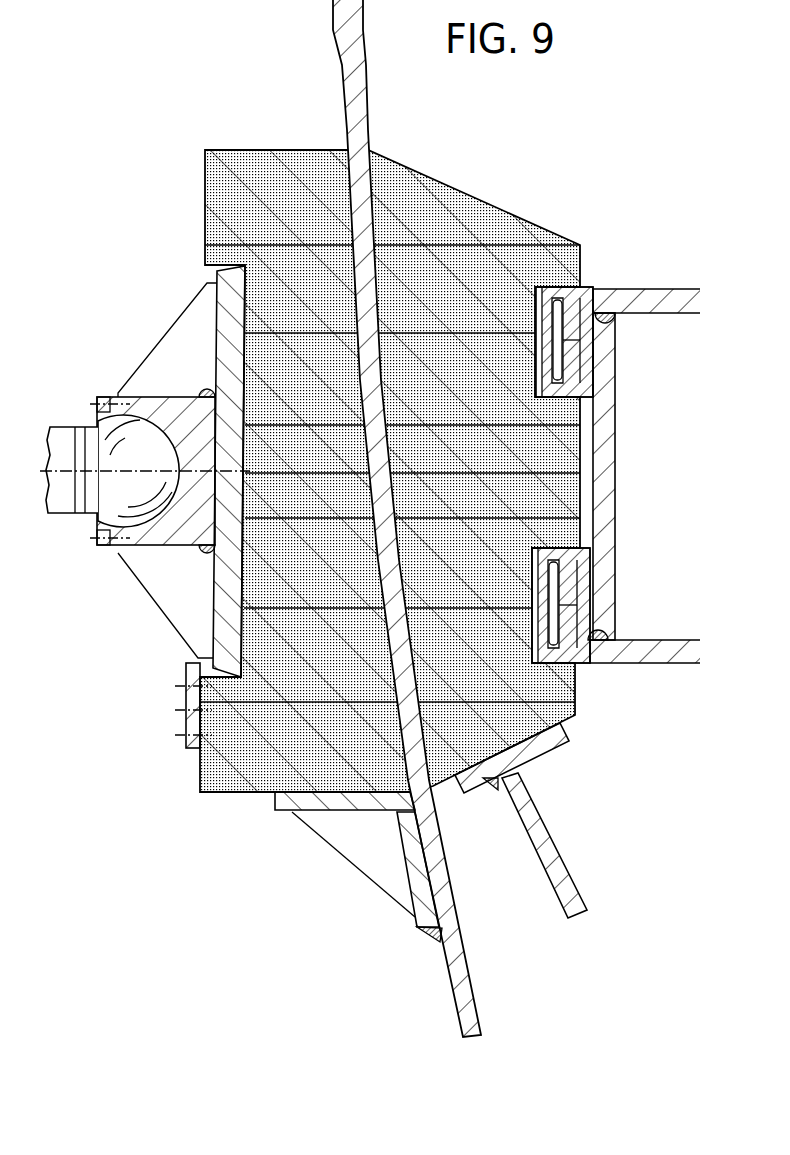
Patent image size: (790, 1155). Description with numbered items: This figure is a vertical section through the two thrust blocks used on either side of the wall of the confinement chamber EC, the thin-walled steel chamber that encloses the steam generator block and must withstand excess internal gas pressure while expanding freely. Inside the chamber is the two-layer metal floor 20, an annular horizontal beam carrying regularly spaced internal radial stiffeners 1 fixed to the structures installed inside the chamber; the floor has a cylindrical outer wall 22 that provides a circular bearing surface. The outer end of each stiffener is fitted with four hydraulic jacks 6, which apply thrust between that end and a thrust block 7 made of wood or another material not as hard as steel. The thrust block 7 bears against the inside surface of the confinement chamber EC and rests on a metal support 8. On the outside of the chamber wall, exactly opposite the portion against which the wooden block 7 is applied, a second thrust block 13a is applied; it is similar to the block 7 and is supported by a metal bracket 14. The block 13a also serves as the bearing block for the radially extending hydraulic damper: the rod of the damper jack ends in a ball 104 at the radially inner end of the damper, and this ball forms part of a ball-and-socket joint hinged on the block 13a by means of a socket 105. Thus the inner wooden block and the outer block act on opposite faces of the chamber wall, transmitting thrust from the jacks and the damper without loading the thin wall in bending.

The thrust block 7 is at (456, 257).
The hydraulic jacks 6 is at (583, 287).
The internal radial stiffeners 1 is at (640, 342).
The two-layer metal floor 20 is at (682, 303).
The cylindrical outer wall 22 is at (605, 466).
The ball 104 is at (128, 485).
The socket 105 is at (183, 513).
The thrust block 13a is at (253, 742).
The metal bracket 14 is at (415, 872).
The metal support 8 is at (550, 862).
The confinement chamber EC is at (460, 973).